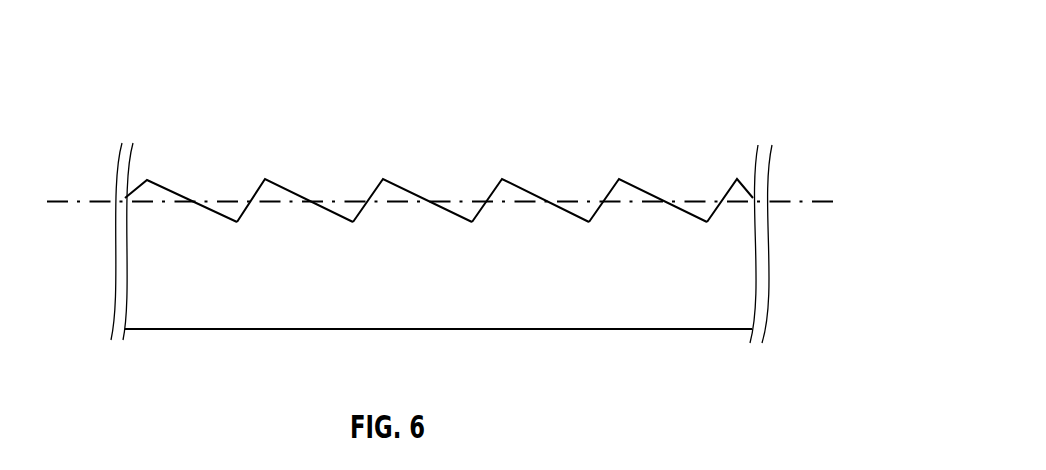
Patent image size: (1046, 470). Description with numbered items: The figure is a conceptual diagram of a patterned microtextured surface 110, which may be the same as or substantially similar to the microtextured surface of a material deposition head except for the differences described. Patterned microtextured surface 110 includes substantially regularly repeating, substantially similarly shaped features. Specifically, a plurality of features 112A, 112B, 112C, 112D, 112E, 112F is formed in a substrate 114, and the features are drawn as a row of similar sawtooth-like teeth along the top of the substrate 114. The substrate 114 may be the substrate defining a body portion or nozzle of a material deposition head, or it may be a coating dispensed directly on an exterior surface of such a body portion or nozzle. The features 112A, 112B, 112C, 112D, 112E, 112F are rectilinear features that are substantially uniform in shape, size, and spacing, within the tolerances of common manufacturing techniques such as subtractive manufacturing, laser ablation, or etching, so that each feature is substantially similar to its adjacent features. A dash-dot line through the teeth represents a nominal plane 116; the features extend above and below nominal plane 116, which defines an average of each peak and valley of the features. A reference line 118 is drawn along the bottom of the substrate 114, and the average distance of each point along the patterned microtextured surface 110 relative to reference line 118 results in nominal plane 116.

The patterned microtextured surface 110 is at (824, 53).
The feature 112A is at (147, 180).
The feature 112B is at (265, 179).
The feature 112C is at (383, 179).
The feature 112D is at (502, 179).
The feature 112E is at (619, 179).
The sixth tooth 112F is at (737, 180).
The substrate 114 is at (302, 313).
The nominal plane 116 is at (97, 201).
The reference line 118 is at (662, 328).